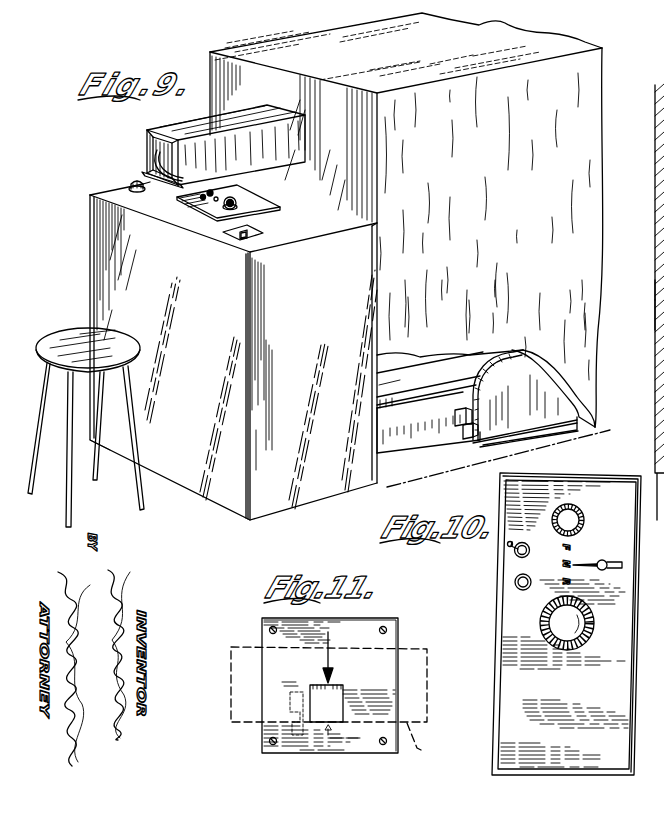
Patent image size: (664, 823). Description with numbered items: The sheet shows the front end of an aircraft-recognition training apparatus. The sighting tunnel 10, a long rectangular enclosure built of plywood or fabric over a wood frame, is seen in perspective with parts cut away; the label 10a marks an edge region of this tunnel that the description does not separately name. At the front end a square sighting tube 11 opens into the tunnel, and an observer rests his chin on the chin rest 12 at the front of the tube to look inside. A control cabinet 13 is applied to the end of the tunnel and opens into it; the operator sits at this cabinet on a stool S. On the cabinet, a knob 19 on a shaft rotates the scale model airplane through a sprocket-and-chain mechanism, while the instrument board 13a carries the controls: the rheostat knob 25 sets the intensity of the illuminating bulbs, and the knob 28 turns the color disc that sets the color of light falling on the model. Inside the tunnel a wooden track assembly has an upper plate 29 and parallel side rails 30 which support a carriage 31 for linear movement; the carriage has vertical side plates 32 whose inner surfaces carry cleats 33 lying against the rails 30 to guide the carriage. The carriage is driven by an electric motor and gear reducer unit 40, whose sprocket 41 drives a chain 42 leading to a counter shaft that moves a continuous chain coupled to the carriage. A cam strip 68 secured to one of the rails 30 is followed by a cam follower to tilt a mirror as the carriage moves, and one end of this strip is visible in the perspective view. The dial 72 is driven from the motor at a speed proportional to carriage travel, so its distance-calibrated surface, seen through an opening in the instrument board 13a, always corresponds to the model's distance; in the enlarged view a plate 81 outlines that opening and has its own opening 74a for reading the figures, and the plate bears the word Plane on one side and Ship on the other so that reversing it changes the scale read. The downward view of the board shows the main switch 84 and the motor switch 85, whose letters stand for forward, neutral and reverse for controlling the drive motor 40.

In FIG. 9, the sighting tunnel 10 is at (545, 45).
In FIG. 9, the enclosure edge 10a is at (353, 205).
In FIG. 9, the sighting tube 11 is at (171, 127).
In FIG. 9, the chin rest 12 is at (153, 160).
In FIG. 9, the control cabinet 13 is at (200, 359).
In FIG. 9, the instrument board 13a is at (307, 232).
In FIG. 9, the knob 19 is at (131, 186).
In FIG. 9, the rheostat operating knob 25 is at (187, 191).
In FIG. 10, the rheostat operating knob 25 is at (582, 511).
In FIG. 9, the knob 28 is at (237, 202).
In FIG. 10, the knob 28 is at (562, 635).
In FIG. 9, the upper plate 29 is at (430, 363).
In FIG. 9, the side rails 30 is at (403, 447).
In FIG. 9, the carriage 31 is at (530, 438).
In FIG. 9, the vertical side plates 32 is at (533, 391).
In FIG. 9, the cleats 33 is at (471, 439).
In FIG. 9, the electric motor and gear reducer unit 40 is at (655, 344).
In FIG. 9, the sprocket 41 is at (655, 313).
In FIG. 9, the chain 42 is at (655, 293).
In FIG. 9, the cam strip 68 is at (456, 409).
In FIG. 11, the dial 72 is at (335, 705).
In FIG. 9, the opening 74a is at (240, 239).
In FIG. 11, the opening 74a is at (317, 721).
In FIG. 9, the plate 81 is at (225, 238).
In FIG. 11, the plate 81 is at (388, 640).
In FIG. 10, the main switch 84 is at (514, 551).
In FIG. 10, the motor switch 85 is at (603, 560).
In FIG. 9, the stool S is at (62, 334).